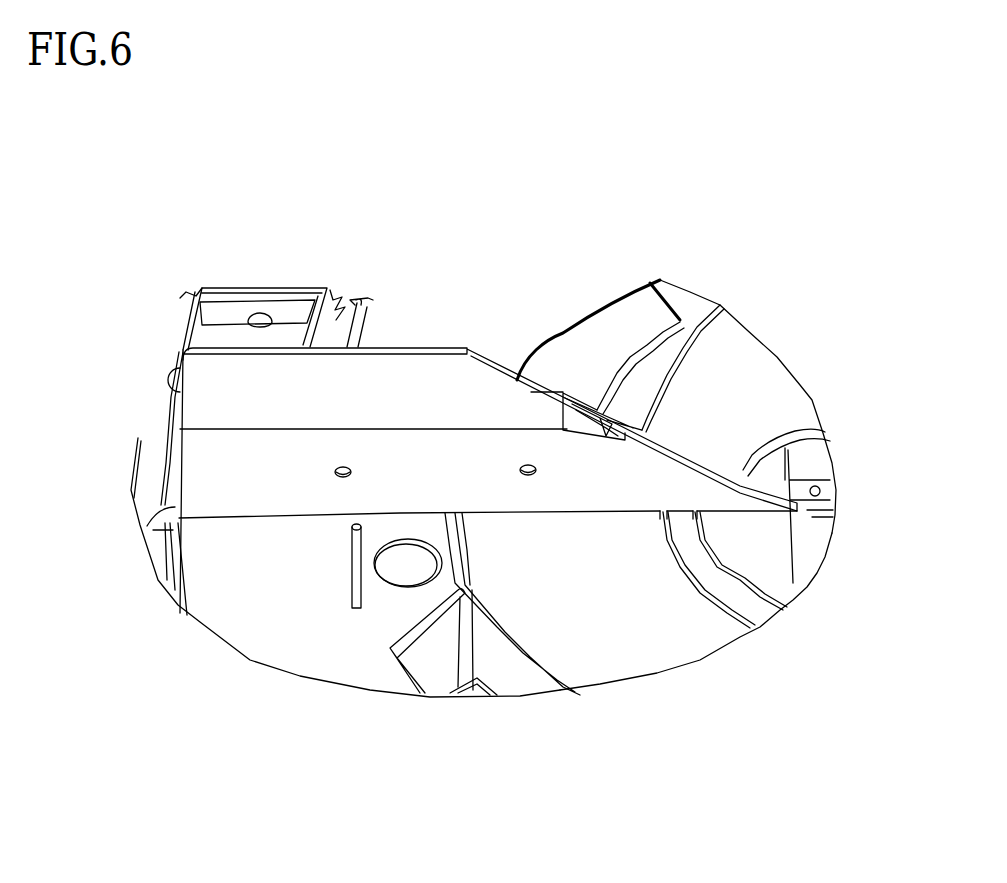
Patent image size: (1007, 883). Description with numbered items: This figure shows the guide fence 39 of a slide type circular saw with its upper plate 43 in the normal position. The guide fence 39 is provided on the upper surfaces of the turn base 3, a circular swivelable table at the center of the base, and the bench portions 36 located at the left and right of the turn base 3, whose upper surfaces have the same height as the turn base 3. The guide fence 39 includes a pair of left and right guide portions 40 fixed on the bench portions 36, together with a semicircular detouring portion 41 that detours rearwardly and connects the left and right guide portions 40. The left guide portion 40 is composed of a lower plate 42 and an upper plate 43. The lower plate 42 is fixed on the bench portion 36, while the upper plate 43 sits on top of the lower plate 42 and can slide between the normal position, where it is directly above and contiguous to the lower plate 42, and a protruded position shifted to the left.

The turn base 3 is at (660, 653).
The bench portion 36 is at (318, 658).
The guide fence 39 is at (585, 391).
The guide portion 40 is at (432, 336).
The semicircular detouring portion 41 is at (775, 373).
The lower plate 42 is at (277, 503).
The upper plate 43 is at (275, 370).